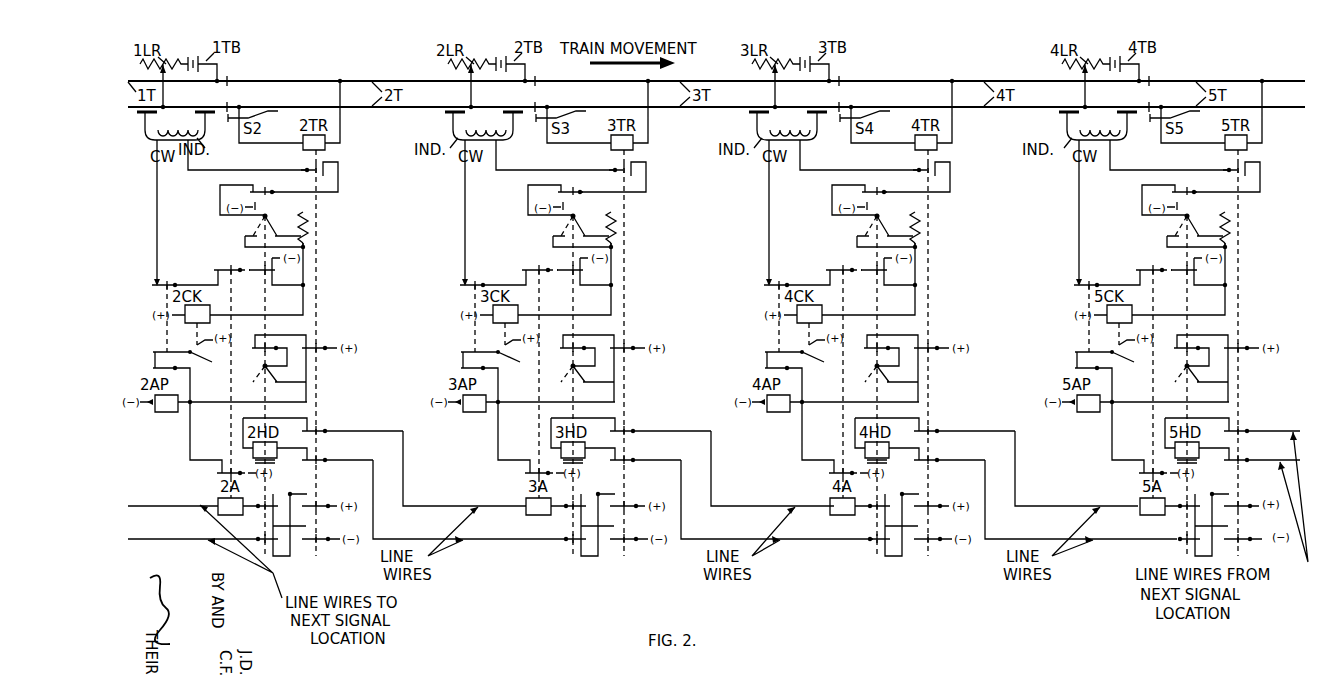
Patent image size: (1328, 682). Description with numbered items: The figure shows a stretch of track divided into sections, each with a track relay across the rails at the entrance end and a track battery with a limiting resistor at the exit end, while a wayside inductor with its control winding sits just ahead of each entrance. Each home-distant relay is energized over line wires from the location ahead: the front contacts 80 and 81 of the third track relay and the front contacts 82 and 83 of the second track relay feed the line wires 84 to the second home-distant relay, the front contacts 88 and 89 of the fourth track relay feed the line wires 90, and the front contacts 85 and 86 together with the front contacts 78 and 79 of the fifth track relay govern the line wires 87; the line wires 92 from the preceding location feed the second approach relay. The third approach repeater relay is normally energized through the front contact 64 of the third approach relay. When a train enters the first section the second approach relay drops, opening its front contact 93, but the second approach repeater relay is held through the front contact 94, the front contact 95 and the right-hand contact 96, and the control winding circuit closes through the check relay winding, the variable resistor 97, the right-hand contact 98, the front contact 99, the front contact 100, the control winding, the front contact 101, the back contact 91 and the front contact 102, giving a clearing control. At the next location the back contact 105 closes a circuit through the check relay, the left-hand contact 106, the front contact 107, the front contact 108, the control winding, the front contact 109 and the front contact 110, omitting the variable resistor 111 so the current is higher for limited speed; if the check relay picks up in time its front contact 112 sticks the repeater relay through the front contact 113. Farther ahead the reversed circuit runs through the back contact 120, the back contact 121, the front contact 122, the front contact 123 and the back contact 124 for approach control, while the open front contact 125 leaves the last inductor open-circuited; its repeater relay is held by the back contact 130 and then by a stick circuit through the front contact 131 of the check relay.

The front contact of relay 3A 64 is at (515, 457).
The front contact of relay 5TR 78 is at (1262, 419).
The front contact of relay 5TR 79 is at (1262, 448).
The front contact of relay 3TR 80 is at (631, 492).
The front contact of relay 3TR 81 is at (629, 551).
The front contact of relay 2TR 82 is at (323, 430).
The front contact of relay 2TR 83 is at (326, 460).
The line wires 84 is at (402, 488).
The front contact of relay 5TR 85 is at (1247, 514).
The front contact of relay 5TR 86 is at (1243, 545).
The line wires 87 is at (1045, 482).
The front contact of relay 4TR 88 is at (935, 492).
The front contact of relay 4TR 89 is at (933, 551).
The line wires 90 is at (764, 485).
The back contact of relay 2A 91 is at (236, 268).
The line wires 92 is at (146, 510).
The front contact of relay 2A 93 is at (224, 472).
The front contact of relay 2TR 94 is at (321, 347).
The front contact of relay 2HD 95 is at (260, 351).
The right-hand contact of relay 2HD 96 is at (273, 377).
The variable resistor 97 is at (308, 238).
The right-hand contact of relay 2HD 98 is at (270, 218).
The front contact of relay 2HD 99 is at (270, 193).
The front contact of relay 2TR 100 is at (304, 168).
The front contact of relay 2AP 101 is at (166, 282).
The front contact of relay 2HD 102 is at (271, 280).
The back contact of relay 3A 105 is at (532, 258).
The left-hand contact of relay 3HD 106 is at (583, 229).
The front contact of relay 3HD 107 is at (571, 195).
The front contact of relay 3TR 108 is at (612, 169).
The front contact of relay 3AP 109 is at (493, 271).
The front contact of relay 3HD 110 is at (578, 280).
The variable resistor 111 is at (640, 227).
The front contact of relay 3CK 112 is at (515, 372).
The front contact of relay 3AP 113 is at (463, 347).
The back contact of relay 4HD 120 is at (880, 279).
The back contact of relay 4A 121 is at (831, 256).
The front contact of relay 4AP 122 is at (797, 275).
The front contact of relay 4TR 123 is at (914, 169).
The back contact of relay 4HD 124 is at (875, 195).
The front contact of relay 5TR 125 is at (1224, 169).
The back contact of relay 5TR 130 is at (1249, 332).
The front contact of relay 5CK 131 is at (1127, 365).